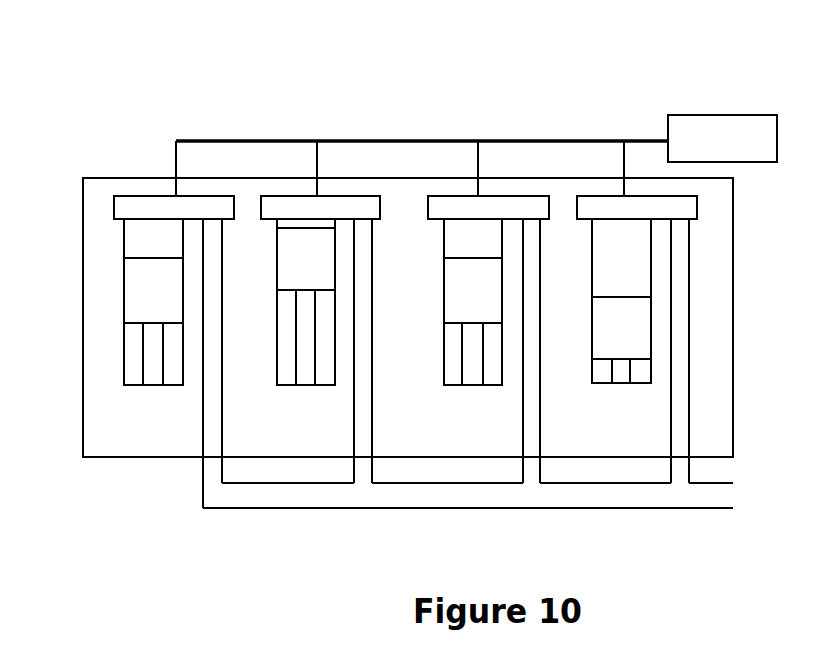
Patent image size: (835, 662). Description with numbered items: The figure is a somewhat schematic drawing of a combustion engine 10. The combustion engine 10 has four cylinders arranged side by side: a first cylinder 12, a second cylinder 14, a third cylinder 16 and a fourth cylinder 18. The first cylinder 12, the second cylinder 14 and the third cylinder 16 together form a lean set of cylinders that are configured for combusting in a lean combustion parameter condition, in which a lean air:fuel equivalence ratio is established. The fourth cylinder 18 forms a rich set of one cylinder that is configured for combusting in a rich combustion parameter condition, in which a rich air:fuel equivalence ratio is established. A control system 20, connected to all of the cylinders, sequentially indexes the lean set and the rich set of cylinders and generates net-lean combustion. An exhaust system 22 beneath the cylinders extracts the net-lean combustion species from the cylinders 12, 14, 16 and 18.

The combustion engine 10 is at (480, 80).
The first cylinder 12 is at (124, 240).
The second cylinder 14 is at (277, 257).
The third cylinder 16 is at (444, 272).
The fourth cylinder 18 is at (592, 268).
The control system 20 is at (728, 115).
The exhaust system 22 is at (358, 508).